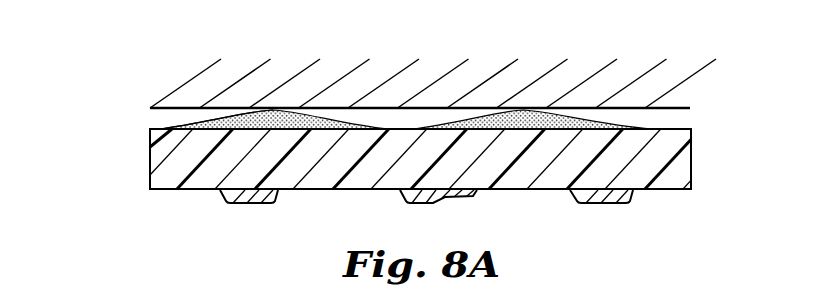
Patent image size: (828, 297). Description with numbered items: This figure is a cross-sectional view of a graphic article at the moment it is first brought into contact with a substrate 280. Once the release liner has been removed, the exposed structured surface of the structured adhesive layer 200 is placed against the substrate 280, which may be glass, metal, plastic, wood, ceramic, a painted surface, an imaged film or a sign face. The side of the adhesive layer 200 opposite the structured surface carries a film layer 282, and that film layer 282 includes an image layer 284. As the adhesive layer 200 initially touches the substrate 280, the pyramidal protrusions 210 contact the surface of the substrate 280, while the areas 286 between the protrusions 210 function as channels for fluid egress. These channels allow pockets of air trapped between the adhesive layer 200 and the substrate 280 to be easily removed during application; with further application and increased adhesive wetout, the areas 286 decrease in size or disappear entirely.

The substrate 280 is at (217, 78).
The structured adhesive layer 200 is at (215, 119).
The pyramidal protrusions 210 is at (287, 110).
The areas between the protrusions 286 is at (417, 121).
The film layer 282 is at (163, 177).
The image layer 284 is at (252, 204).